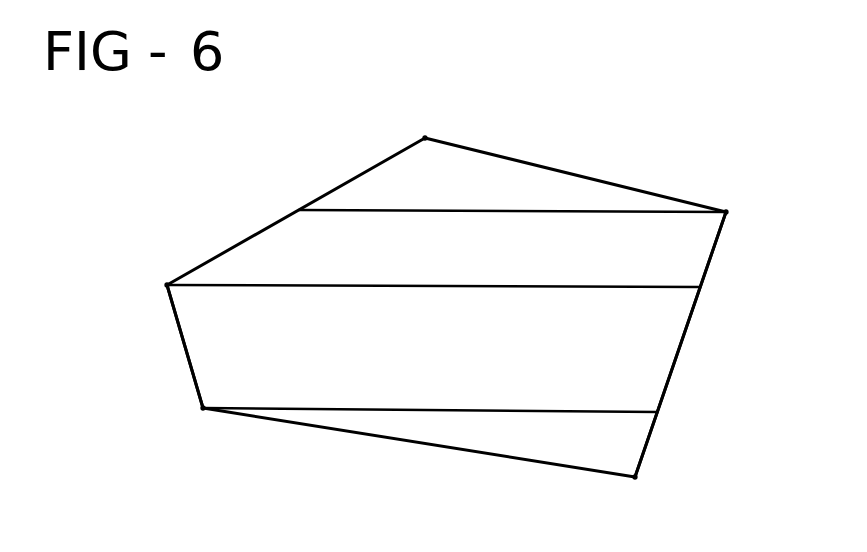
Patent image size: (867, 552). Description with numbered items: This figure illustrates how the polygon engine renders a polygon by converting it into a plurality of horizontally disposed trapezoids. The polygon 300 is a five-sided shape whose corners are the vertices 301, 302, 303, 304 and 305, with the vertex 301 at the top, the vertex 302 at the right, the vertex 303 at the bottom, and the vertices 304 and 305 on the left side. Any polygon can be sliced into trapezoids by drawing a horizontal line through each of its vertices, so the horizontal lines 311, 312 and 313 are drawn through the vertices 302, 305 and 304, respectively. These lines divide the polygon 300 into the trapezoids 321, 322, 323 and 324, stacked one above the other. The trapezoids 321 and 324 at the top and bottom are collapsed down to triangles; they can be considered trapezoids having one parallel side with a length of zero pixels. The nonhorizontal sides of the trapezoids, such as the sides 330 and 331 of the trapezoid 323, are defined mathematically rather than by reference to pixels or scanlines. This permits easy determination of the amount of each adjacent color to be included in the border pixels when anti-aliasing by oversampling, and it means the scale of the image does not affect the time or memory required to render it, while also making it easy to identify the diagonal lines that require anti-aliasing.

The polygon 300 is at (613, 166).
The vertex 301 is at (425, 138).
The vertex 302 is at (726, 212).
The vertex 303 is at (635, 477).
The vertex 304 is at (203, 408).
The vertex 305 is at (167, 285).
The horizontal line 311 is at (557, 210).
The horizontal line 312 is at (622, 287).
The horizontal line 313 is at (522, 412).
The trapezoid 321 is at (438, 196).
The trapezoid 322 is at (438, 262).
The trapezoid 323 is at (438, 362).
The trapezoid 324 is at (612, 451).
The side 330 is at (183, 350).
The side 331 is at (685, 330).